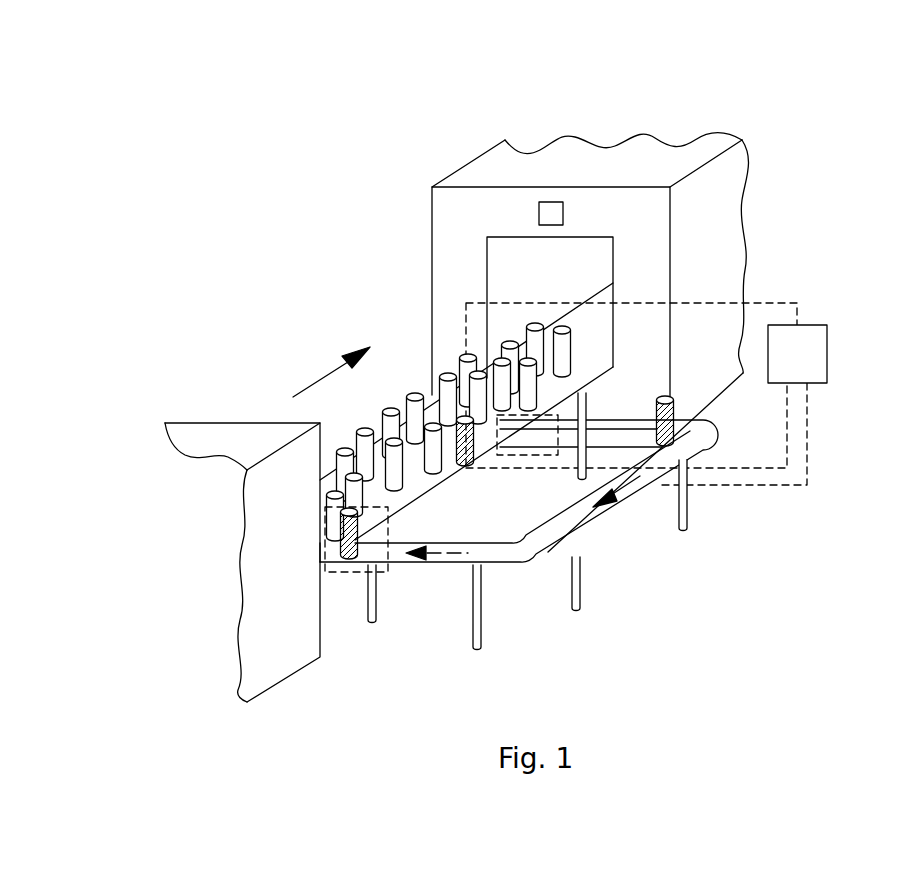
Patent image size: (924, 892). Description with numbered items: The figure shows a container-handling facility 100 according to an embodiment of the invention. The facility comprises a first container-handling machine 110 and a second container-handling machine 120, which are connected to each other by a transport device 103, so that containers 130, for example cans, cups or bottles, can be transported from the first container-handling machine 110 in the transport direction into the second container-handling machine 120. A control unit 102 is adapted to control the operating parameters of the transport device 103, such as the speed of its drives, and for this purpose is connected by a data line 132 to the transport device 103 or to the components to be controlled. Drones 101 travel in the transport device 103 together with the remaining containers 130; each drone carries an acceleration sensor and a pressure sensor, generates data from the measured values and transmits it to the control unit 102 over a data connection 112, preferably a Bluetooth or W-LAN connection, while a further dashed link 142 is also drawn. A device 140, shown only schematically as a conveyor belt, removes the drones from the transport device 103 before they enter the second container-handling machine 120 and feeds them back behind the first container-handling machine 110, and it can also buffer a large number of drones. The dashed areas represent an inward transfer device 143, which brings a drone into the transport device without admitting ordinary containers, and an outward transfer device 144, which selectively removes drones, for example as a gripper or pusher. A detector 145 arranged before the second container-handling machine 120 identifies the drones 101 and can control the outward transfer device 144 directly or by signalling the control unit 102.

The container-handling facility 100 is at (792, 153).
The drone 101 is at (333, 565).
The control unit 102 is at (818, 345).
The transport device 103 is at (370, 417).
The first container-handling machine 110 is at (292, 658).
The data connection 112 is at (763, 303).
The second container-handling machine 120 is at (464, 174).
The container 130 is at (564, 355).
The data line 132 is at (747, 467).
The device for outward and inward transfer of drones 140 is at (633, 503).
The communication link 142 is at (810, 470).
The inward transfer device 143 is at (386, 545).
The outward transfer device 144 is at (520, 455).
The detector 145 is at (563, 213).